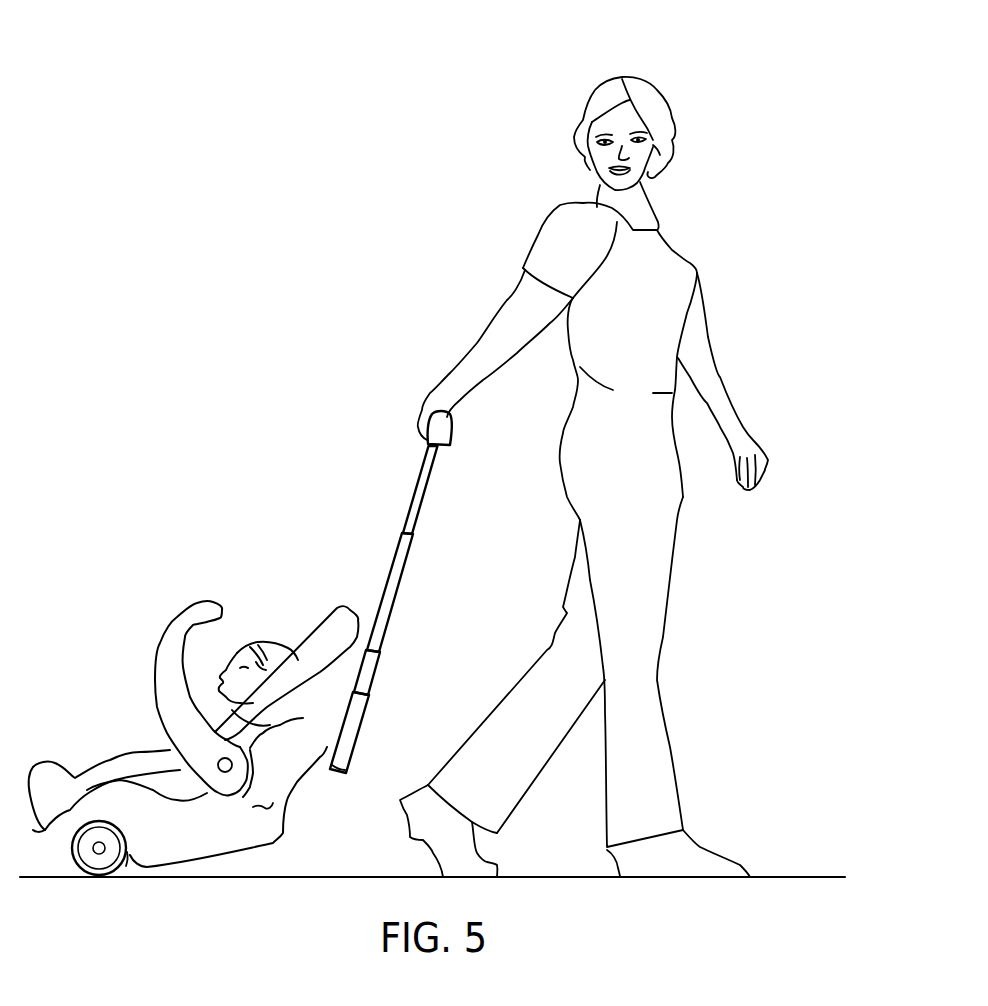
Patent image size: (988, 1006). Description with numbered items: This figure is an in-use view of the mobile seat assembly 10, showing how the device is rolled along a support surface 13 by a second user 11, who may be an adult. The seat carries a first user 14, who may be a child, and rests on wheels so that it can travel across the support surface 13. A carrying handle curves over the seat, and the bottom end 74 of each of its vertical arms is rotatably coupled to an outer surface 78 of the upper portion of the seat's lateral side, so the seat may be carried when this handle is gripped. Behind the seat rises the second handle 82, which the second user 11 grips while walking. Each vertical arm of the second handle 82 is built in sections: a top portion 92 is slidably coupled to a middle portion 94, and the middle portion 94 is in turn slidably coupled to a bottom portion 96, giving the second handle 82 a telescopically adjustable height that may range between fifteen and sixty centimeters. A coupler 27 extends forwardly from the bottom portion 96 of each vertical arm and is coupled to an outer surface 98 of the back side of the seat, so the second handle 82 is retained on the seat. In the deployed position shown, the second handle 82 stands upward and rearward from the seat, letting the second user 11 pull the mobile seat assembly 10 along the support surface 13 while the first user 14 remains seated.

The mobile seat assembly 10 is at (213, 352).
The second user 11 is at (647, 92).
The support surface 13 is at (562, 877).
The first user 14 is at (277, 650).
The couplers 27 is at (322, 756).
The bottom end 74 is at (230, 783).
The outer surface 78 is at (270, 803).
The second handle 82 is at (406, 592).
The top portion 92 is at (423, 500).
The middle portion 94 is at (400, 573).
The bottom portion 96 is at (363, 720).
The outer surface 98 is at (373, 692).